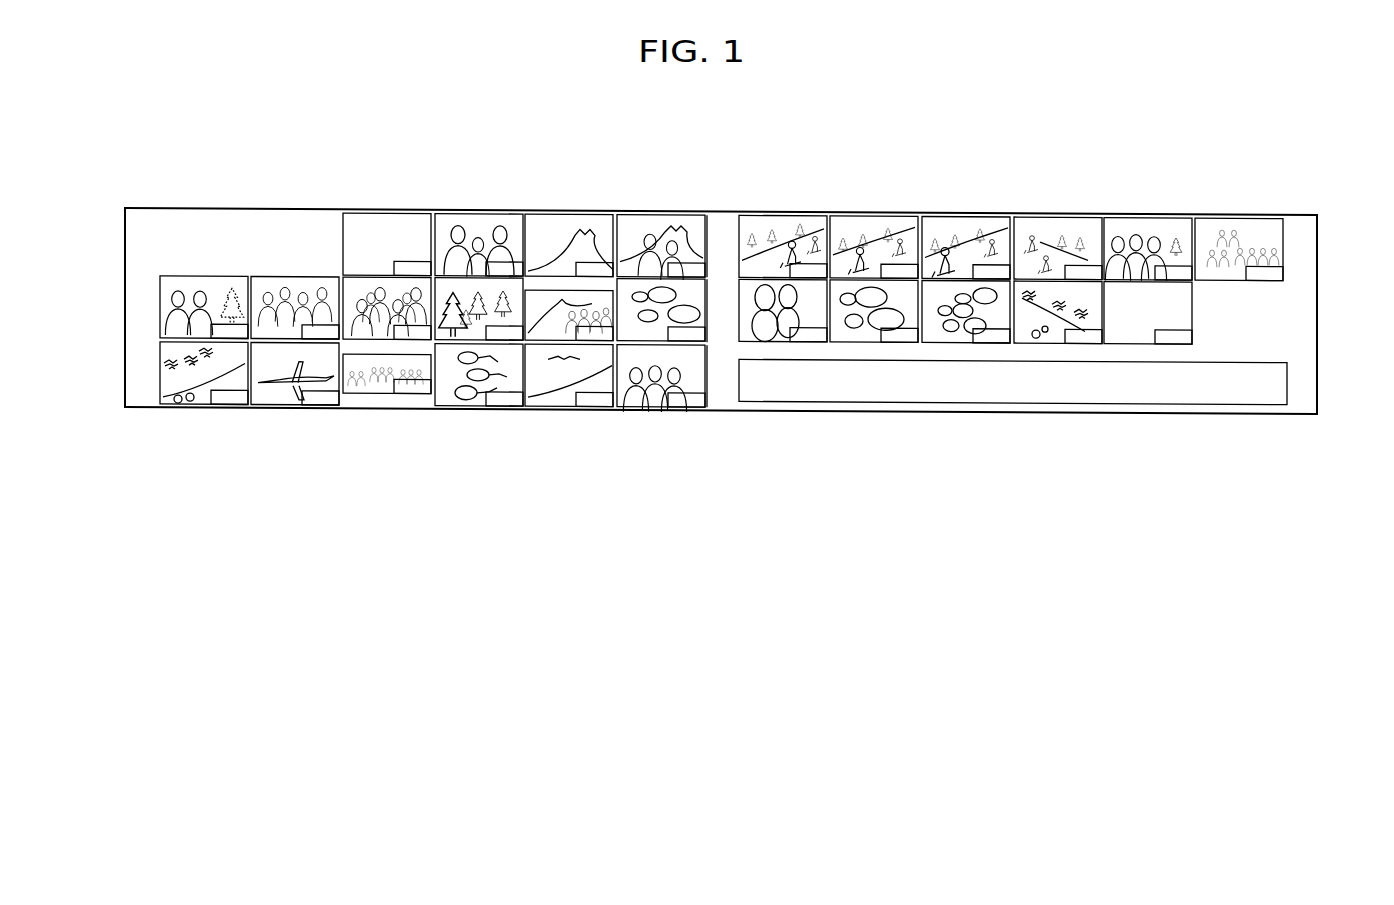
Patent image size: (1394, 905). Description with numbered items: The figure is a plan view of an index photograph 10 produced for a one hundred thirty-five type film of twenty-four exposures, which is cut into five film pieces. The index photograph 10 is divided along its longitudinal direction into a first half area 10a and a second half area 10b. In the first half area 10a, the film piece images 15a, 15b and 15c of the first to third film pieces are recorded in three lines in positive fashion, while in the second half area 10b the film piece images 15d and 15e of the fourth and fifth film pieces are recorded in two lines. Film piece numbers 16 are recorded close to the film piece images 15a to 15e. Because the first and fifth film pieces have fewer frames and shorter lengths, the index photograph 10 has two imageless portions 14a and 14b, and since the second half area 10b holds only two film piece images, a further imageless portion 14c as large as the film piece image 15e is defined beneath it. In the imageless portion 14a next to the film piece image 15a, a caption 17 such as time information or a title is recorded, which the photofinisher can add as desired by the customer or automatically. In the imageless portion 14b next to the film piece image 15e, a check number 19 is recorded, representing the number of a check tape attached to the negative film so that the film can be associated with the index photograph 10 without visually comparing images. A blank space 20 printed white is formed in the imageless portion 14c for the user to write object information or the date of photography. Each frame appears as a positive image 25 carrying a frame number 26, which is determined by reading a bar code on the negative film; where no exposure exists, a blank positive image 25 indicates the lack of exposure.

The index photograph 10 is at (859, 563).
The first half area 10a is at (627, 408).
The second half area 10b is at (813, 403).
The imageless portion 14a is at (258, 230).
The imageless portion 14b is at (1283, 302).
The imageless portion 14c is at (1050, 349).
The film piece image 15a is at (707, 246).
The film piece image 15b is at (707, 311).
The film piece image 15c is at (707, 383).
The film piece image 15d is at (1286, 238).
The film piece image 15e is at (1196, 301).
The film piece numbers 16 is at (137, 369).
The caption 17 is at (203, 229).
The check number 19 is at (1295, 325).
The blank space 20 is at (875, 387).
The positive image 25 is at (547, 215).
The frame number 26 is at (592, 258).